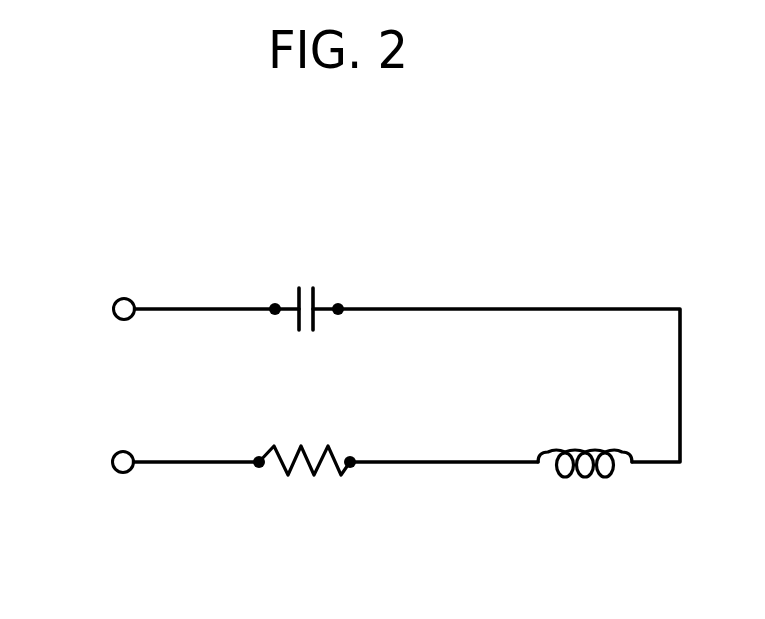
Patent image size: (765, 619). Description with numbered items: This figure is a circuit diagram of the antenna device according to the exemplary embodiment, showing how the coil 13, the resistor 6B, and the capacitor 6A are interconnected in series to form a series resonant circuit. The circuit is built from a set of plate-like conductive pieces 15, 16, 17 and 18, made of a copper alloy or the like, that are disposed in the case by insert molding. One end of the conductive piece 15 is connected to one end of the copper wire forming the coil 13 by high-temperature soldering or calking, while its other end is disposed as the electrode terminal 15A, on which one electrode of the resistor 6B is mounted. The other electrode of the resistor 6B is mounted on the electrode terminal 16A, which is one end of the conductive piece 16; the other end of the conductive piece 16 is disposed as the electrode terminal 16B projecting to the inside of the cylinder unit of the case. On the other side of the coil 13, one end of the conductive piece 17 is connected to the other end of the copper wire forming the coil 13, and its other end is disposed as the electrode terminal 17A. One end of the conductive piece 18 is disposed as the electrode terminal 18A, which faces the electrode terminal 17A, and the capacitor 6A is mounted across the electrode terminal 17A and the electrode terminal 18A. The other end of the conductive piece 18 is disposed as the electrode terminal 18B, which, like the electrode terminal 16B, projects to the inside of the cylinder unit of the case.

The electrode terminal 18B is at (117, 299).
The conductive piece 18 is at (207, 307).
The electrode terminal 18A is at (273, 304).
The capacitor 6A is at (307, 287).
The electrode terminal 17A is at (341, 304).
The conductive piece 17 is at (560, 308).
The electrode terminal 16B is at (119, 473).
The conductive piece 16 is at (192, 464).
The electrode terminal 16A is at (257, 467).
The resistor 6B is at (308, 482).
The electrode terminal 15A is at (352, 467).
The conductive piece 15 is at (482, 464).
The coil 13 is at (585, 478).